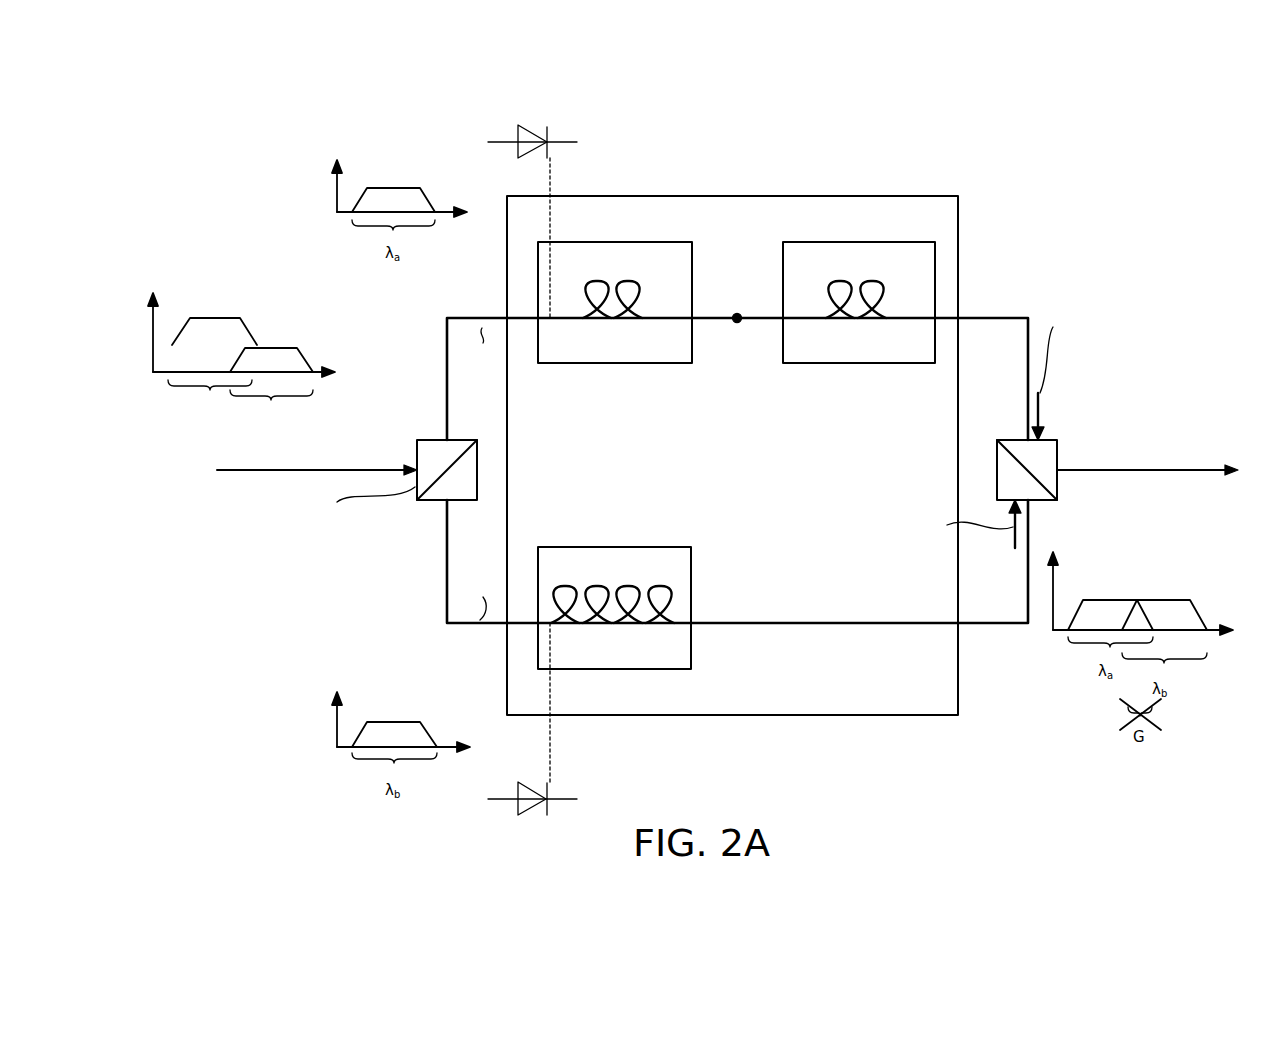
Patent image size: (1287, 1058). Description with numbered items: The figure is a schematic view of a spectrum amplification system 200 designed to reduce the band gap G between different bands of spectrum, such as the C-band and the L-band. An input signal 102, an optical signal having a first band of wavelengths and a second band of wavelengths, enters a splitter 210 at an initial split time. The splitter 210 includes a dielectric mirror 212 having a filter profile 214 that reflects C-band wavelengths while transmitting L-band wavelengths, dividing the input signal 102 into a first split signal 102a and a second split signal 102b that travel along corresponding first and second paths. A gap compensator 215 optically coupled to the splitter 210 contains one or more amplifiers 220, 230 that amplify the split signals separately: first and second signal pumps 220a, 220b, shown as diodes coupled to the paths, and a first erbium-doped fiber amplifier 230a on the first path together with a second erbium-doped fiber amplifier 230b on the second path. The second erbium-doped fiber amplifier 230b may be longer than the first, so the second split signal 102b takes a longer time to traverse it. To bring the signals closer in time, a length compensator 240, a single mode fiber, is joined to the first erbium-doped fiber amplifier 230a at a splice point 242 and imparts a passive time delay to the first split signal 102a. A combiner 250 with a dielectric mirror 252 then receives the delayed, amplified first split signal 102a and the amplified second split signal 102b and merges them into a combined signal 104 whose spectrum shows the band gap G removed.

The spectrum amplification system 200 is at (1091, 128).
The input signal 102 is at (367, 465).
The first split signal 102a is at (465, 313).
The second split signal 102b is at (465, 628).
The combined signal 104 is at (1089, 465).
The splitter 210 is at (433, 440).
The dielectric mirror 212 is at (453, 453).
The filter profile 214 is at (277, 312).
The gap compensator 215 is at (835, 223).
The amplifier 220 is at (537, 474).
The first signal pump 220a is at (545, 103).
The second signal pump 220b is at (533, 808).
The amplifier 230 is at (615, 455).
The first erbium-doped fiber amplifier 230a is at (615, 363).
The second erbium-doped fiber amplifier 230b is at (615, 547).
The length compensator 240 is at (860, 363).
The splice point 242 is at (733, 323).
The combiner 250 is at (1050, 437).
The dielectric mirror 252 is at (1022, 440).